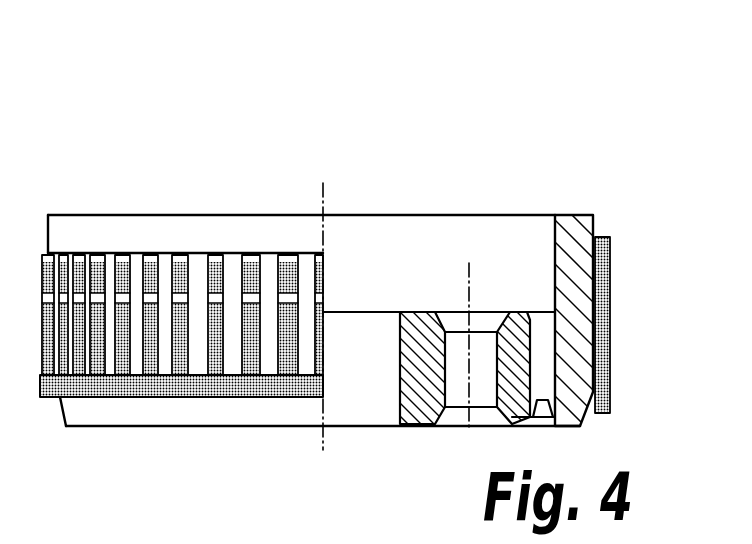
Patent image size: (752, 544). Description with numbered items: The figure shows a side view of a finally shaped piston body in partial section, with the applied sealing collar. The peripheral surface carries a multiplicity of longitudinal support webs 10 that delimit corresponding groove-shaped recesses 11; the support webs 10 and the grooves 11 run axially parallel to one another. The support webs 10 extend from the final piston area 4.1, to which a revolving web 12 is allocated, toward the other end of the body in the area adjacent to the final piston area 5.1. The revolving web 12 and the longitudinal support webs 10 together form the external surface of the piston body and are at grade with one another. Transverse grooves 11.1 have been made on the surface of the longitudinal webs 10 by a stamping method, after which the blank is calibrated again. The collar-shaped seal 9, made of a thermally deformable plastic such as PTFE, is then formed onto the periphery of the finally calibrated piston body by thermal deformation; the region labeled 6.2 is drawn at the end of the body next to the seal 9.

The final piston area 4.1 is at (236, 427).
The final piston area 5.1 is at (299, 206).
The housing end flange 6.2 is at (531, 185).
The seal 9 is at (622, 289).
The longitudinal support webs 10 is at (176, 254).
The groove-shaped recesses 11 is at (232, 275).
The transverse grooves 11.1 is at (128, 290).
The revolving web 12 is at (207, 398).